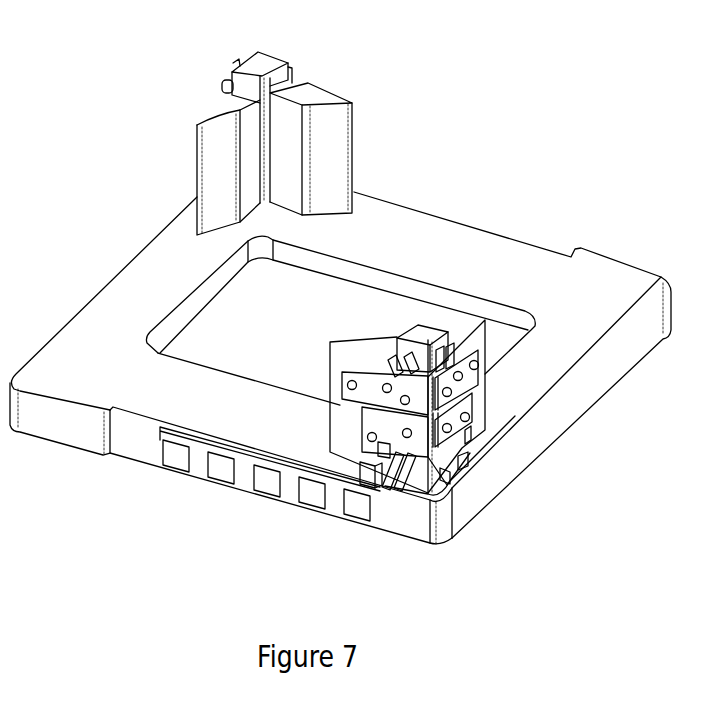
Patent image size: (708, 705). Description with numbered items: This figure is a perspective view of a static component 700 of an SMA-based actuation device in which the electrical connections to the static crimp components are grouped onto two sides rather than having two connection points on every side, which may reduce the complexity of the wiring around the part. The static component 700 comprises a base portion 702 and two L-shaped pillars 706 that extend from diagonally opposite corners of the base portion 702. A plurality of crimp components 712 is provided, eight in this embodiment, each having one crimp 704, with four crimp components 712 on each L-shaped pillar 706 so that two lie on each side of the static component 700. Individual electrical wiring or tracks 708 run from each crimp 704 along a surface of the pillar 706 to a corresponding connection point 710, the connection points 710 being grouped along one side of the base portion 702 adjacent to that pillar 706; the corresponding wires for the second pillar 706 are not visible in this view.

The static component 700 is at (100, 84).
The base portion 702 is at (95, 320).
The crimp 704 is at (400, 342).
The L-shaped pillar 706 is at (313, 98).
The electrical wiring or tracks 708 is at (371, 480).
The connection point 710 is at (175, 460).
The crimp component 712 is at (353, 442).